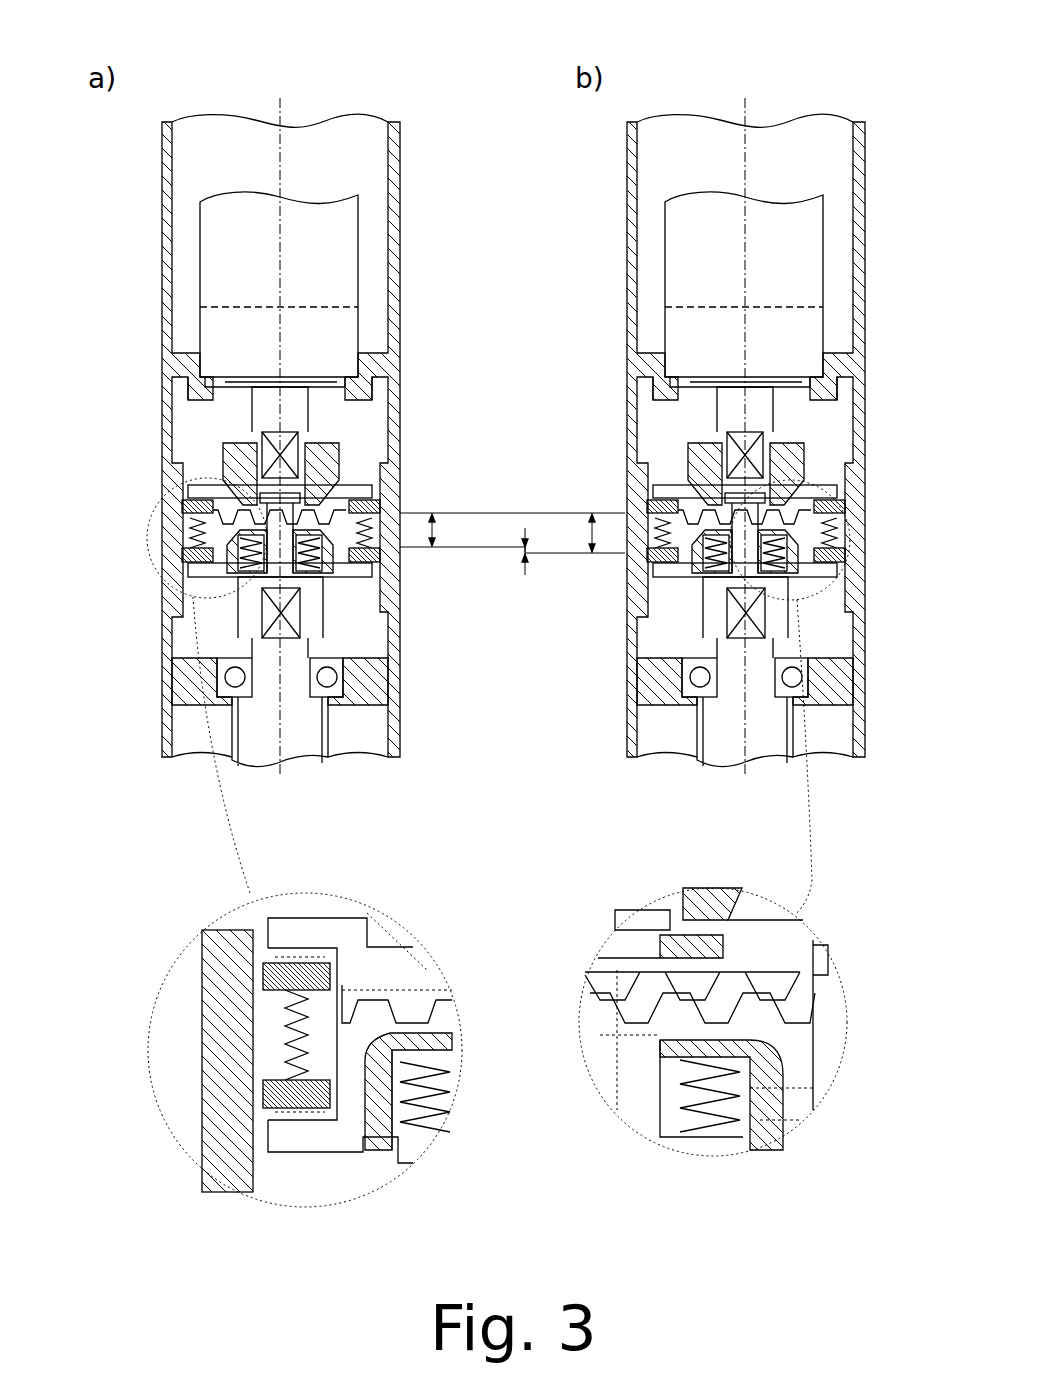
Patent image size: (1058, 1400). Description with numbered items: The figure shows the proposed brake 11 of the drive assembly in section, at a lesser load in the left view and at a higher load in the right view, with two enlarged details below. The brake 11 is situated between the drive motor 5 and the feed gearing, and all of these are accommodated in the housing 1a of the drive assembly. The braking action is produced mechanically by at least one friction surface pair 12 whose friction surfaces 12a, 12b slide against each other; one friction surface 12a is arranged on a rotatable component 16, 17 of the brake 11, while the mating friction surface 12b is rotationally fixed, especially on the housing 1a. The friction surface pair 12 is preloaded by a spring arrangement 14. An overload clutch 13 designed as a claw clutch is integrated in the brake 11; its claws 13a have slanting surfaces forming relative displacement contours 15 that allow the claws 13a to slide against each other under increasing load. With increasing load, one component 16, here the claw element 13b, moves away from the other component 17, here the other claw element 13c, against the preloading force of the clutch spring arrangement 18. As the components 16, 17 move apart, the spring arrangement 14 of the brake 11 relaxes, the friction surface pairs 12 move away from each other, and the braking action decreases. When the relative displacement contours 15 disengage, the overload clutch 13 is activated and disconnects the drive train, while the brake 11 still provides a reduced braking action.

The drive motor 5 is at (325, 230).
The brake 11 is at (415, 431).
The overload clutch 13 is at (415, 476).
The housing 1a is at (625, 585).
The friction surface pair 12 is at (178, 875).
The friction surface 12a is at (202, 930).
The friction surface 12b is at (262, 972).
The spring arrangement 14 is at (300, 1028).
The component 17 is at (423, 975).
The claw element 13c is at (460, 934).
The component 16 is at (703, 1140).
The claw element 13b is at (489, 1129).
The spring arrangement 18 is at (685, 1088).
The relative displacement contours 15 is at (803, 965).
The claws 13a is at (803, 1013).